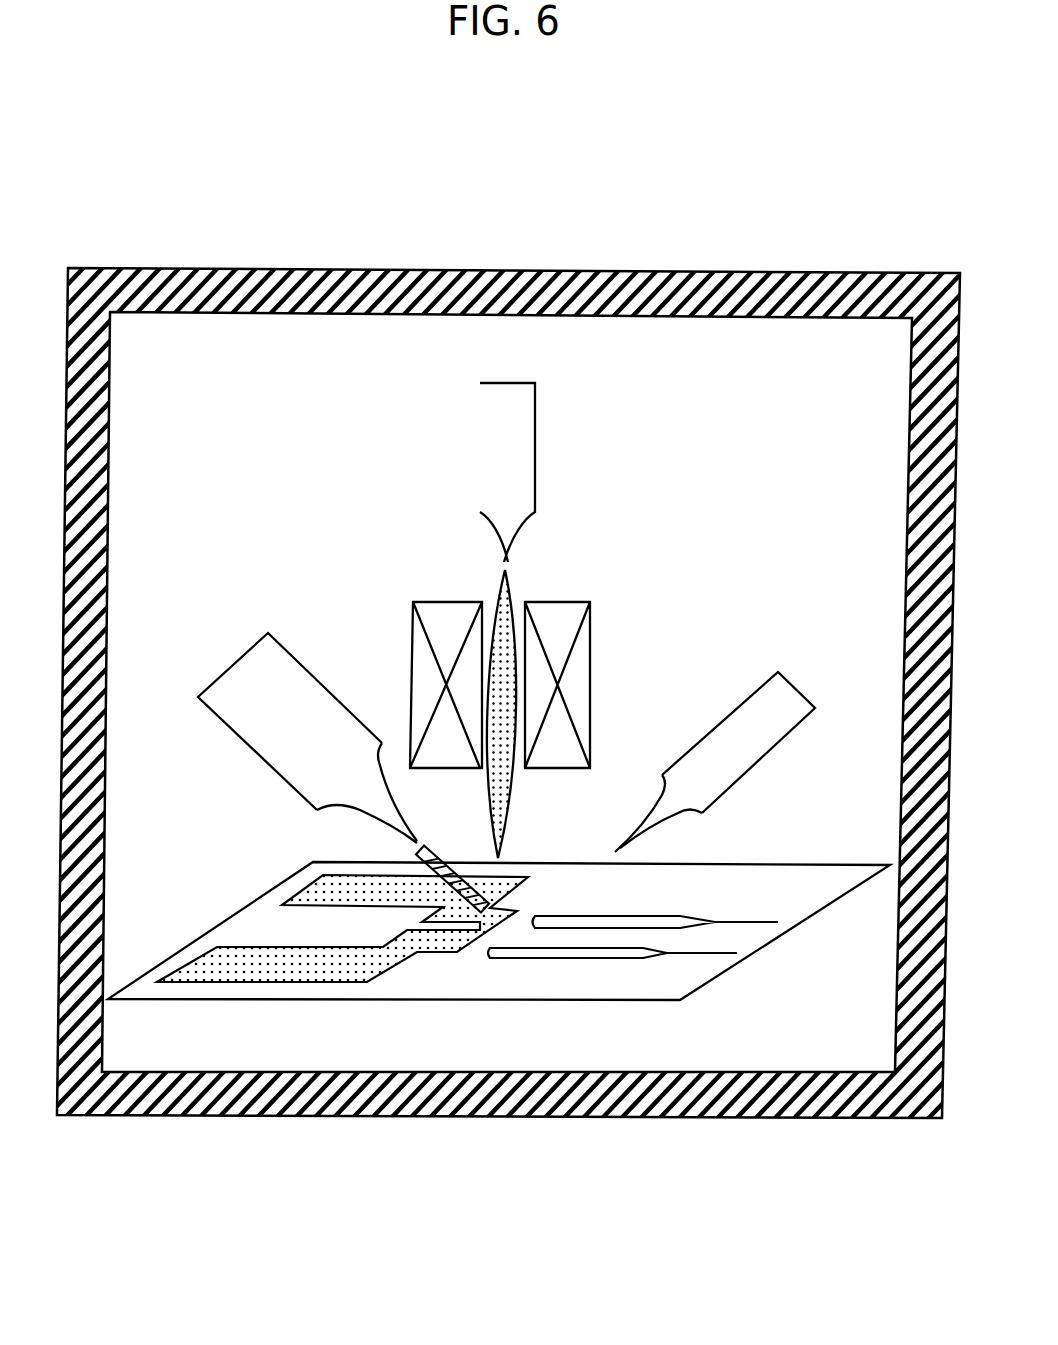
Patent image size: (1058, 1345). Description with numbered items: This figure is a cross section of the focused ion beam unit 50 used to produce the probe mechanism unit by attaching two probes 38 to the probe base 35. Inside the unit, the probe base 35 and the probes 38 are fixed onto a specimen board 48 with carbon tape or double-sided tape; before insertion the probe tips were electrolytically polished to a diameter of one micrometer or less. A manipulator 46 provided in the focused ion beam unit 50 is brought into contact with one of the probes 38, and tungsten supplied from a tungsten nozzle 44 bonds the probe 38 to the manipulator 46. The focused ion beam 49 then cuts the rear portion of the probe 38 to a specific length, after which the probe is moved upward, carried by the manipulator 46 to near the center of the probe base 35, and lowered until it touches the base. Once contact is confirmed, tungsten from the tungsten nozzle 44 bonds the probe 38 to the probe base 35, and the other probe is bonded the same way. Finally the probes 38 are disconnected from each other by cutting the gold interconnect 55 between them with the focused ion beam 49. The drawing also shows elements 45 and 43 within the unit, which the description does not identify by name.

The focused ion beam unit 50 is at (797, 1074).
The electron gun 45 is at (512, 458).
The focused ion beam 49 is at (510, 592).
The detector 43 is at (281, 750).
The manipulator 46 is at (743, 755).
The specimen board 48 is at (695, 890).
The probe base 35 is at (342, 963).
The gold interconnect 55 is at (273, 979).
The tungsten nozzle 44 is at (433, 873).
The probes 38 is at (580, 954).